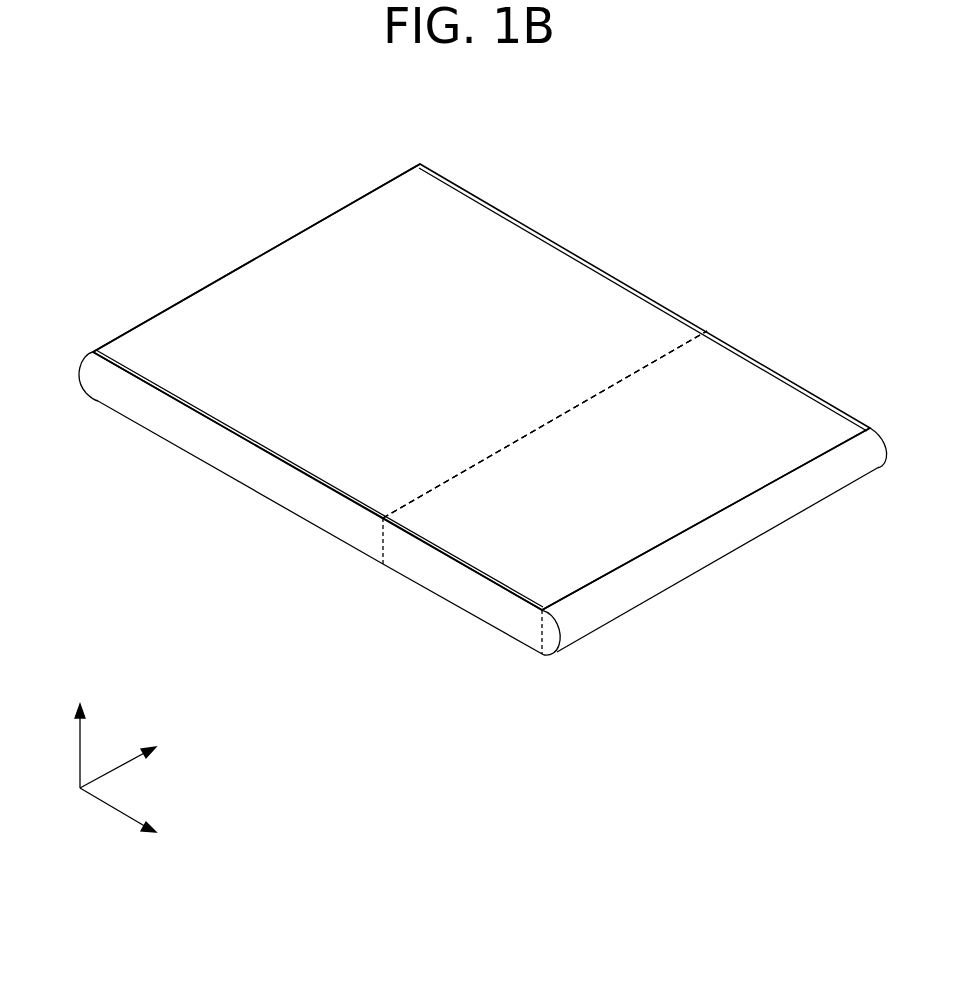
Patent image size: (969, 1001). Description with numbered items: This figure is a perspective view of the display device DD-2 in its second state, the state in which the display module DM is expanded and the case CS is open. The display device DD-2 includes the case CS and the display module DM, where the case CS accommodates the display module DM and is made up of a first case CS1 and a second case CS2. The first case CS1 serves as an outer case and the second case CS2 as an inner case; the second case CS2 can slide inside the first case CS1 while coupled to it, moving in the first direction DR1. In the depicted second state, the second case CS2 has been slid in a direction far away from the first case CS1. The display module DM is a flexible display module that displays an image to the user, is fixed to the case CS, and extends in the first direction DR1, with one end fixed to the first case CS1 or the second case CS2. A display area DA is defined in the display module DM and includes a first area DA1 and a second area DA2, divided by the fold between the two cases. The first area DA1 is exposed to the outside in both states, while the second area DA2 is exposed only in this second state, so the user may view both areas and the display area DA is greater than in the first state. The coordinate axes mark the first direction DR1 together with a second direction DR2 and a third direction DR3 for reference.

The display device DD-2 is at (483, 412).
The display module DM is at (481, 380).
The display area DA is at (661, 220).
The first area DA1 is at (646, 321).
The second area DA2 is at (741, 377).
The case CS is at (319, 538).
The first case CS1 is at (348, 533).
The second case CS2 is at (471, 613).
The first direction DR1 is at (138, 818).
The second direction DR2 is at (137, 761).
The third direction DR3 is at (80, 733).